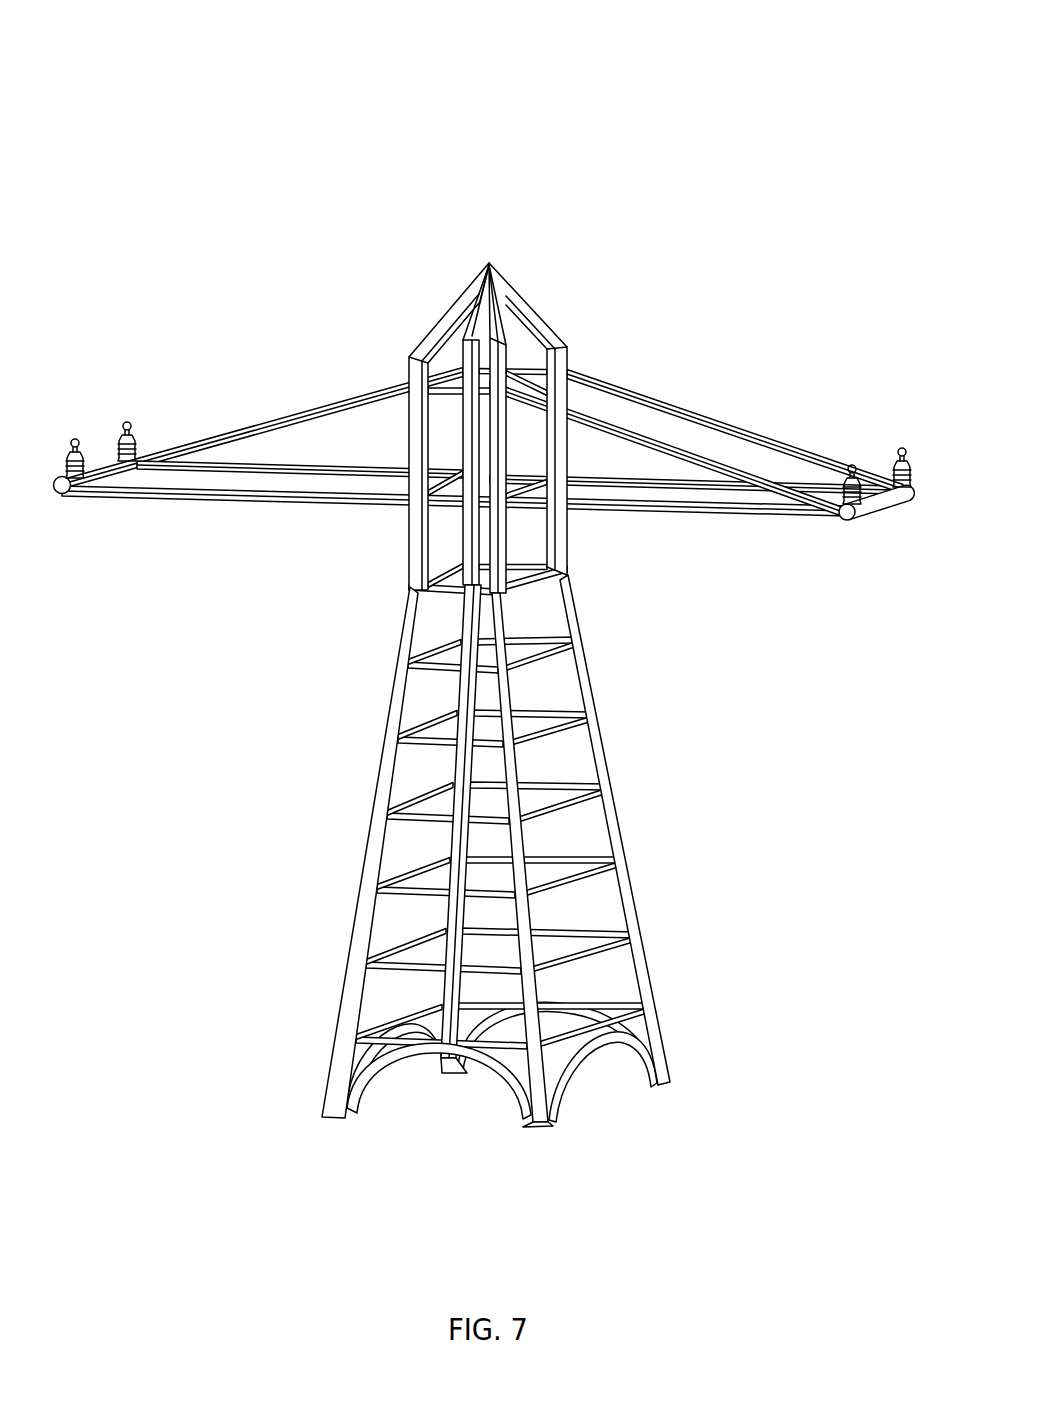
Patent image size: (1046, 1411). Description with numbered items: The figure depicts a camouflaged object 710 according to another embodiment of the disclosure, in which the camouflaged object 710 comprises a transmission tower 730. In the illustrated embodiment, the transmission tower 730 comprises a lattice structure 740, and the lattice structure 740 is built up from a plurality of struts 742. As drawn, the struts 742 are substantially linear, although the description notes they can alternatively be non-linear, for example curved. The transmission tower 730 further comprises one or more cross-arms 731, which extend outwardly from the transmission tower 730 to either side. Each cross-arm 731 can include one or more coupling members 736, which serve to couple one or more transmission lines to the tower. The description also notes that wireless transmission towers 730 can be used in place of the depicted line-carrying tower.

The camouflaged object 710 is at (502, 578).
The transmission tower 730 is at (539, 851).
The cross-arm 731 is at (707, 415).
The coupling member 736 is at (903, 451).
The lattice structure 740 is at (603, 750).
The strut 742 is at (572, 866).